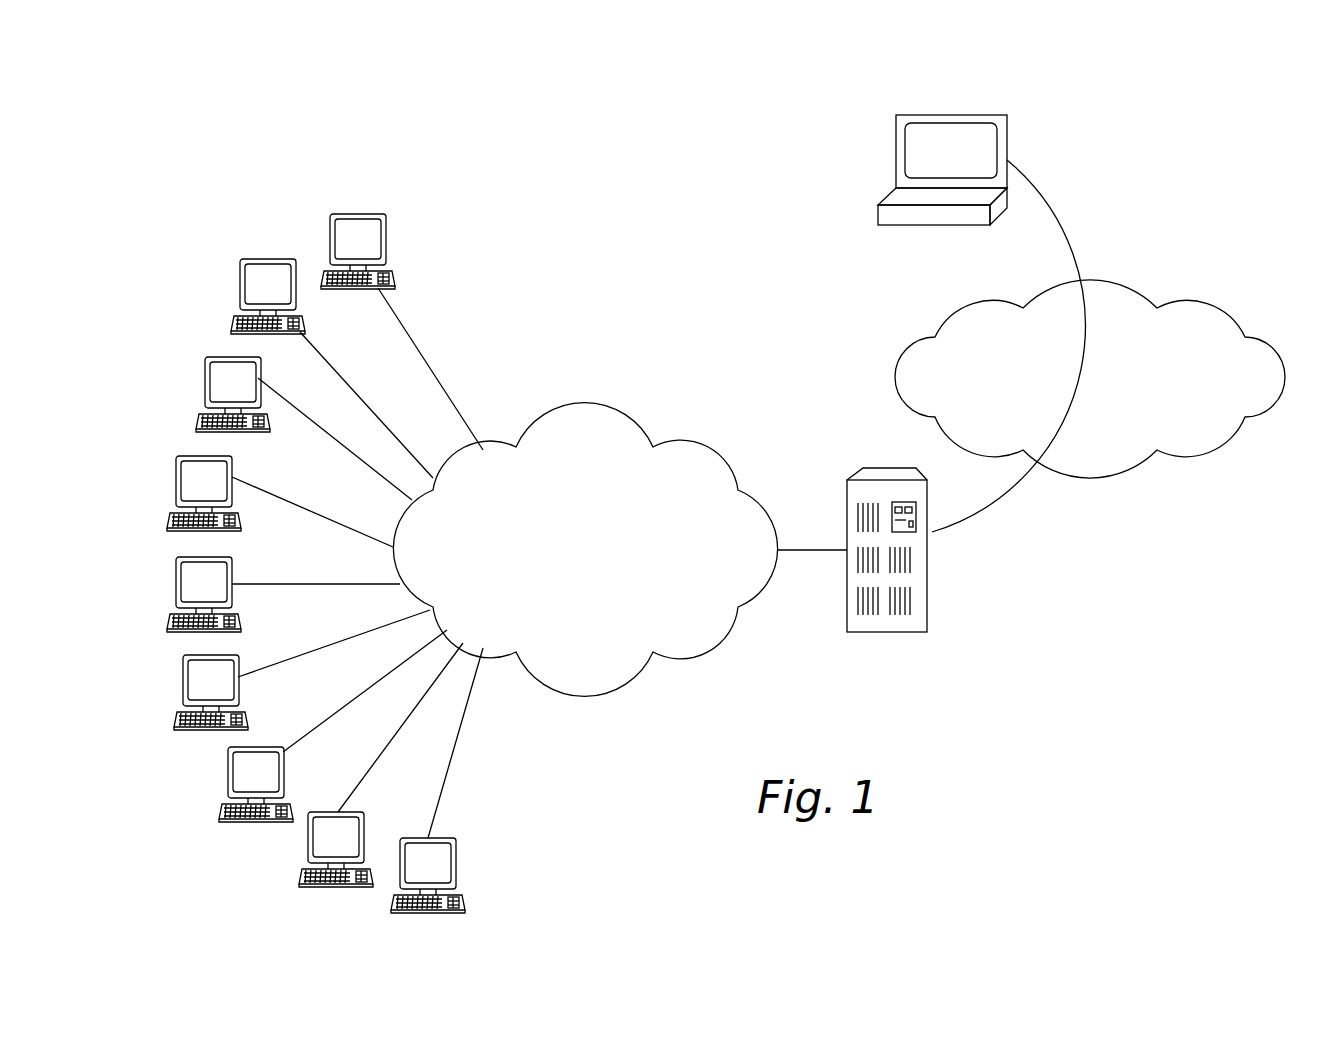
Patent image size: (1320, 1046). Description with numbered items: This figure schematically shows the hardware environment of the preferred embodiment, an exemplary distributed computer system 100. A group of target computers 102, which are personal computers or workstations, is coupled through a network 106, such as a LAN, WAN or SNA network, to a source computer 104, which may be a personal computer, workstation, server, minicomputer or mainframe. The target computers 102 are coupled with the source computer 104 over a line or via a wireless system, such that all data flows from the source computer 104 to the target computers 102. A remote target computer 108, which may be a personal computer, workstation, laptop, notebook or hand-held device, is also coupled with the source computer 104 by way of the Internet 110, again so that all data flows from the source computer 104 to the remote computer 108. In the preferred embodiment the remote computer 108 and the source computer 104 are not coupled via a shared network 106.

The distributed computer system 100 is at (468, 140).
The target computer 102 is at (340, 213).
The source computer 104 is at (927, 547).
The network 106 is at (700, 453).
The remote target computer 108 is at (977, 115).
The Internet 110 is at (1147, 293).